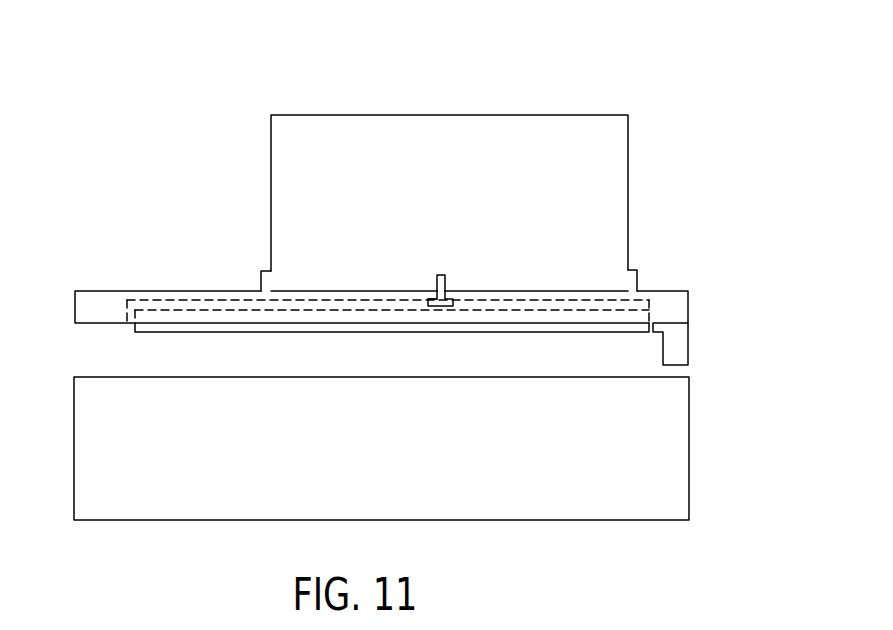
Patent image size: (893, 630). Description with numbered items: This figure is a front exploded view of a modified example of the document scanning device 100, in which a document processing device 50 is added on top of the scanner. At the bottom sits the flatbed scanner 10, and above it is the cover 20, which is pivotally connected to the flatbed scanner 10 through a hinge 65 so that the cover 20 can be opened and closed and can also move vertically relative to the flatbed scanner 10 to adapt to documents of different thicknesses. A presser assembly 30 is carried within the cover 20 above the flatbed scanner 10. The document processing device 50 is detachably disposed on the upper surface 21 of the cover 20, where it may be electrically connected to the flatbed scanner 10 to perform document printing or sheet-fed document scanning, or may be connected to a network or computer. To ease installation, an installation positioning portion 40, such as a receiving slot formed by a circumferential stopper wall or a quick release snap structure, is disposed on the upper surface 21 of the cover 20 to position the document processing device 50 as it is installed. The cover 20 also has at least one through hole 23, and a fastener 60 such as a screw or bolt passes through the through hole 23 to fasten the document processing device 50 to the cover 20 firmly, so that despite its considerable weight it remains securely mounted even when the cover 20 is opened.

The document scanning device 100 is at (313, 53).
The flatbed scanner 10 is at (680, 433).
The cover 20 is at (102, 300).
The upper surface 21 is at (185, 290).
The through hole 23 is at (432, 293).
The presser assembly 30 is at (157, 300).
The installation positioning portion 40 is at (260, 280).
The document processing device 50 is at (270, 197).
The fastener 60 is at (444, 277).
The hinge 65 is at (687, 338).